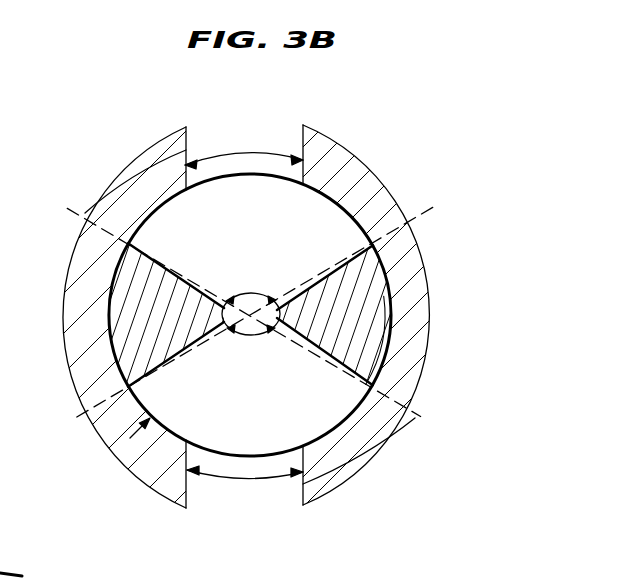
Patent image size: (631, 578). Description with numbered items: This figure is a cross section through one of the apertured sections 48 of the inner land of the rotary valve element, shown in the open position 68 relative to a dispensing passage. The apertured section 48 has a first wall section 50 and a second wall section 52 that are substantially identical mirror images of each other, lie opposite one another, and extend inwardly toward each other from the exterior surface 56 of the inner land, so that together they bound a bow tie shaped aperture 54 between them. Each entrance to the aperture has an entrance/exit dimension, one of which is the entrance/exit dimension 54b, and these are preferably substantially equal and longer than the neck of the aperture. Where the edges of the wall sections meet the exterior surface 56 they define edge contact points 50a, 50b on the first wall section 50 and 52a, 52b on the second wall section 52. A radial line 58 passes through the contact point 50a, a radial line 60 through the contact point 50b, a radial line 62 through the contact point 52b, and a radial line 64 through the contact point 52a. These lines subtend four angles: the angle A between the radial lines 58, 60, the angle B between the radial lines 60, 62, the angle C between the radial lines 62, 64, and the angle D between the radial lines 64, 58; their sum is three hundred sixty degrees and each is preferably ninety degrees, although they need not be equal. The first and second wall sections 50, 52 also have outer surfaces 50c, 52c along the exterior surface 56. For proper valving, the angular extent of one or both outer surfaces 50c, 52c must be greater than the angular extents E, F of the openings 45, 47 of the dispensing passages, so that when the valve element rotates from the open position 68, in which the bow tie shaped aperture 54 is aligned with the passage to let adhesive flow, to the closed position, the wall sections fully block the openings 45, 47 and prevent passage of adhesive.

The opening 45 is at (258, 138).
The opening 47 is at (266, 490).
The apertured section 48 is at (130, 450).
The first wall section 50 is at (380, 300).
The edge contact point 50a is at (376, 236).
The edge contact point 50b is at (372, 388).
The outer surface 50c is at (393, 333).
The second wall section 52 is at (120, 340).
The edge contact point 52a is at (125, 241).
The edge contact point 52b is at (127, 387).
The outer surface 52c is at (110, 302).
The bow tie shaped aperture 54 is at (207, 243).
The entrance/exit dimension 54b is at (0, 13).
The exterior surface 56 is at (342, 235).
The radial line 58 is at (329, 305).
The radial line 60 is at (285, 465).
The radial line 62 is at (115, 423).
The radial line 64 is at (150, 224).
The open position 68 is at (205, 145).
The angle A is at (277, 295).
The angle B is at (253, 335).
The angle C is at (231, 334).
The angle D is at (233, 296).
The angular extent E is at (220, 152).
The angular extent F is at (250, 479).